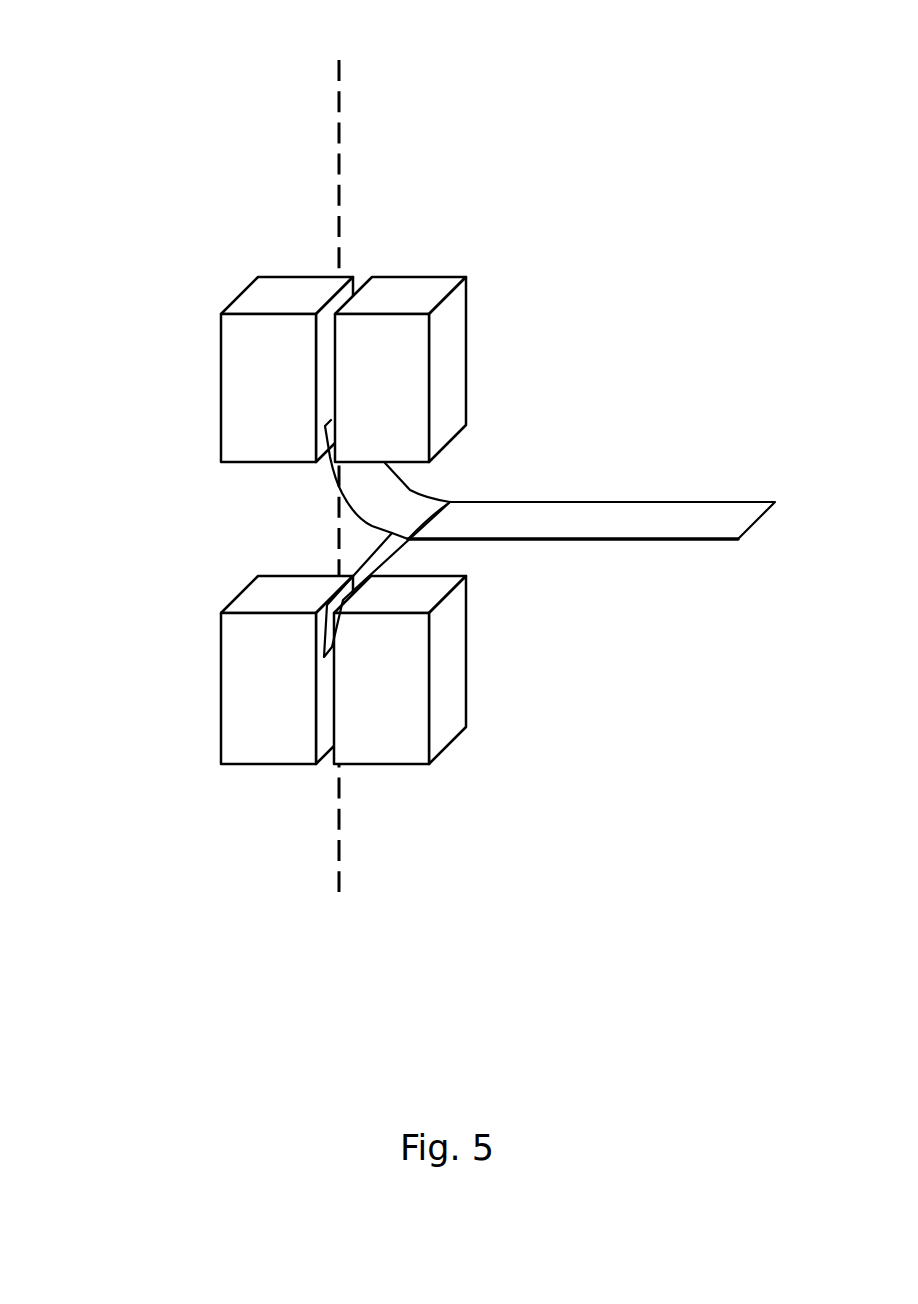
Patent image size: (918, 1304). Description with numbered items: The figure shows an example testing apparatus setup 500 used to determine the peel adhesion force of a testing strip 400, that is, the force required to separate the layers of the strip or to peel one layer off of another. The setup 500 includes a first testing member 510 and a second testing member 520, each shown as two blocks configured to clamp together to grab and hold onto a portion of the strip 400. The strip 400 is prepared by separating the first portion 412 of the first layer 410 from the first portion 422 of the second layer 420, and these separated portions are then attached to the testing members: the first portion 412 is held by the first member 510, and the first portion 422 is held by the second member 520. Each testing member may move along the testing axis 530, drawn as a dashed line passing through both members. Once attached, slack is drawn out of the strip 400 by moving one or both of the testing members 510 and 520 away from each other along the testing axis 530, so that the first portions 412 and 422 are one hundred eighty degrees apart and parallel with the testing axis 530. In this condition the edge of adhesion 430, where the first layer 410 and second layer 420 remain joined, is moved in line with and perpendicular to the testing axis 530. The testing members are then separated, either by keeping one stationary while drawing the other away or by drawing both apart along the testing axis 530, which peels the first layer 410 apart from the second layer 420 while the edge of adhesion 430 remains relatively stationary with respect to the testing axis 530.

The testing strip 400 is at (690, 460).
The first layer 410 is at (582, 500).
The second layer 420 is at (588, 542).
The first portion of the first layer 412 is at (340, 496).
The first portion of the second layer 422 is at (350, 575).
The edge of adhesion 430 is at (448, 506).
The testing apparatus setup 500 is at (158, 76).
The first testing member 510 is at (270, 252).
The second testing member 520 is at (260, 790).
The testing axis 530 is at (339, 163).